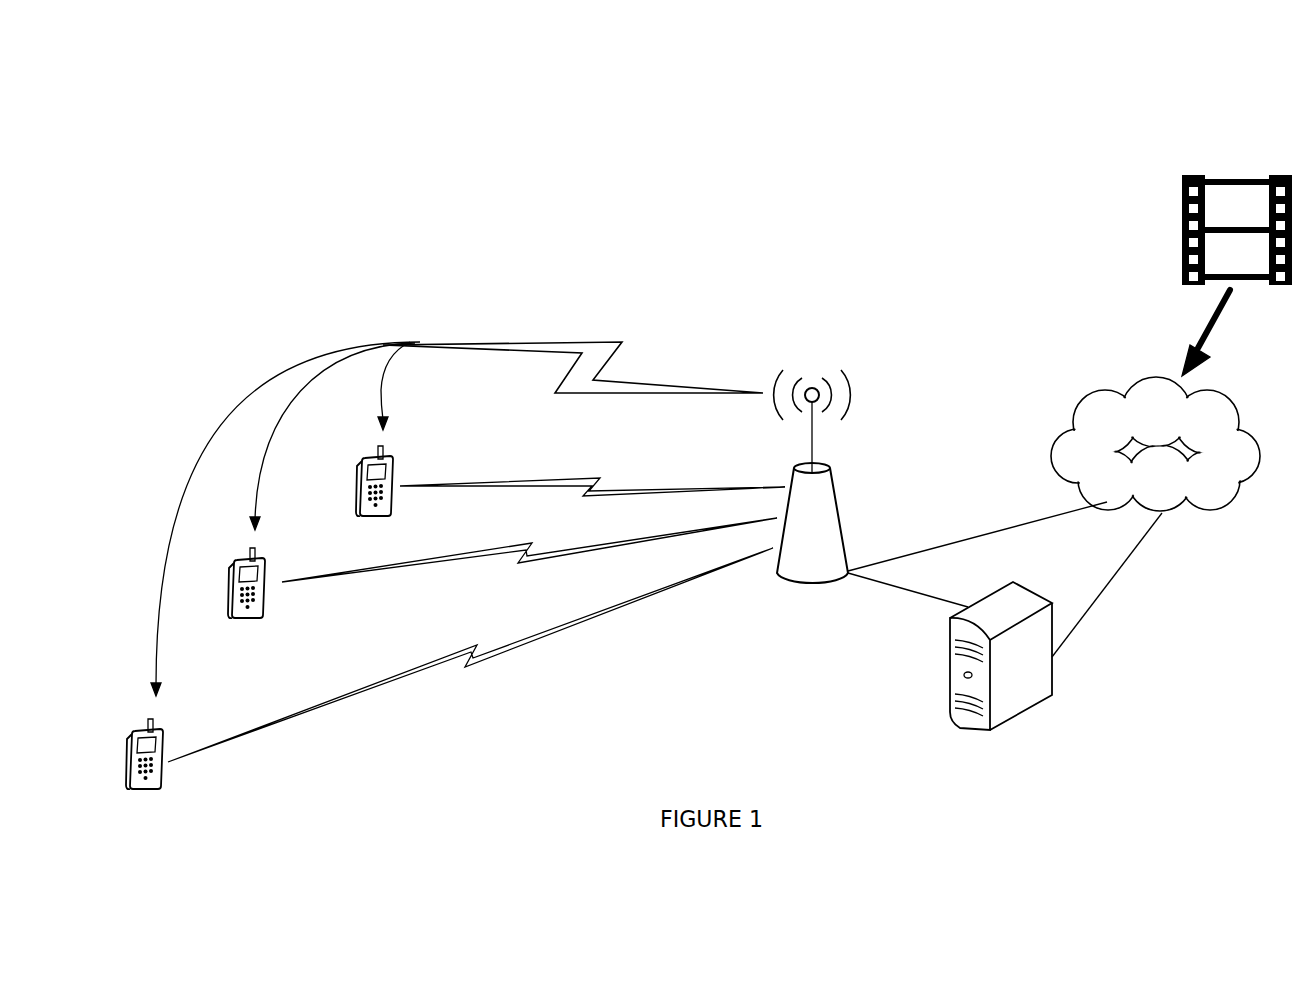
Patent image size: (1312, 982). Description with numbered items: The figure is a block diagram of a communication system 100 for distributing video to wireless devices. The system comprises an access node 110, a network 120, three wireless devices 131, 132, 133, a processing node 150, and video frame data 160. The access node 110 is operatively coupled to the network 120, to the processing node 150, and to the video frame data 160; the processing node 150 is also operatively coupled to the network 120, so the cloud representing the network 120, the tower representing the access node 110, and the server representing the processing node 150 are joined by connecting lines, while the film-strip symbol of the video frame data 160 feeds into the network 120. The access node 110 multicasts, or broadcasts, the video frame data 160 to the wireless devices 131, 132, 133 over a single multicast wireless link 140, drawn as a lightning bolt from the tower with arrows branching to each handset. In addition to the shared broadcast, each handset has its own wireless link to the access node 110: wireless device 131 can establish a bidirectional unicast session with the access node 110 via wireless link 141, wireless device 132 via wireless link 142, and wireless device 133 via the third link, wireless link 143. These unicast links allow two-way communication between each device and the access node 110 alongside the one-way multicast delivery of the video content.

The communication system 100 is at (190, 85).
The access node 110 is at (808, 588).
The network 120 is at (1174, 469).
The wireless device 131 is at (372, 515).
The wireless device 132 is at (245, 620).
The wireless device 133 is at (147, 790).
The multicast wireless link 140 is at (591, 342).
The wireless link 141 is at (585, 480).
The wireless link 142 is at (585, 546).
The wireless link 143 is at (550, 632).
The processing node 150 is at (978, 723).
The video frame data 160 is at (1178, 167).